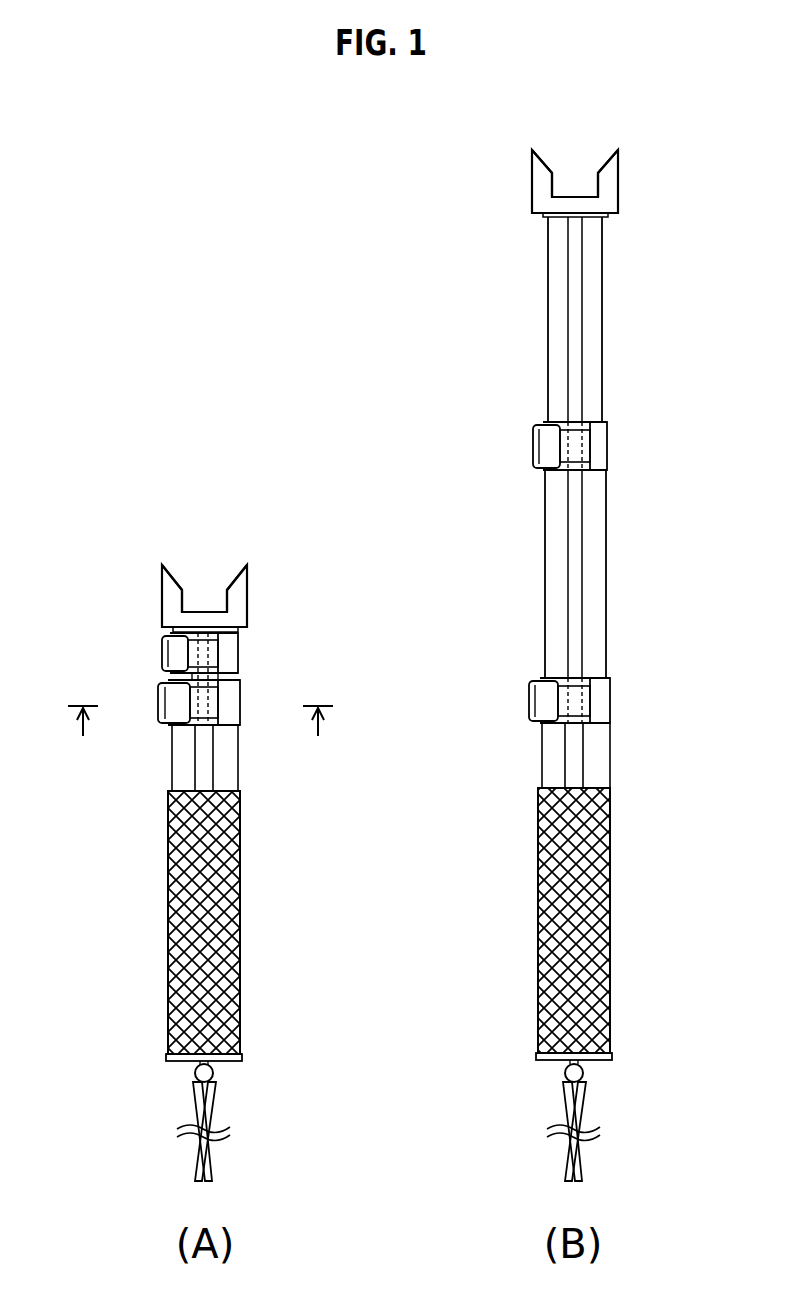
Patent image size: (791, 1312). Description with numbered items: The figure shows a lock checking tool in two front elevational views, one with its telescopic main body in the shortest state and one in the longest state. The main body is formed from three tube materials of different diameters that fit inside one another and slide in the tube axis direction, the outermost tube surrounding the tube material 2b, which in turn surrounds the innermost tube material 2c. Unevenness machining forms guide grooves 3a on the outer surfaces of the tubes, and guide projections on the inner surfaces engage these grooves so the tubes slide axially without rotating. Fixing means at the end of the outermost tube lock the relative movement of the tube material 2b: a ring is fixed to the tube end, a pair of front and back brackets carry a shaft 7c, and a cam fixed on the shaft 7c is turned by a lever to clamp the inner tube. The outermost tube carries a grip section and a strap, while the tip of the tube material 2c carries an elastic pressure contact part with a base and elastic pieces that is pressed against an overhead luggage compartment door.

The tube material 2b is at (553, 570).
The tube material 2c is at (554, 360).
The guide groove 3a is at (578, 330).
The shaft 7c is at (565, 445).